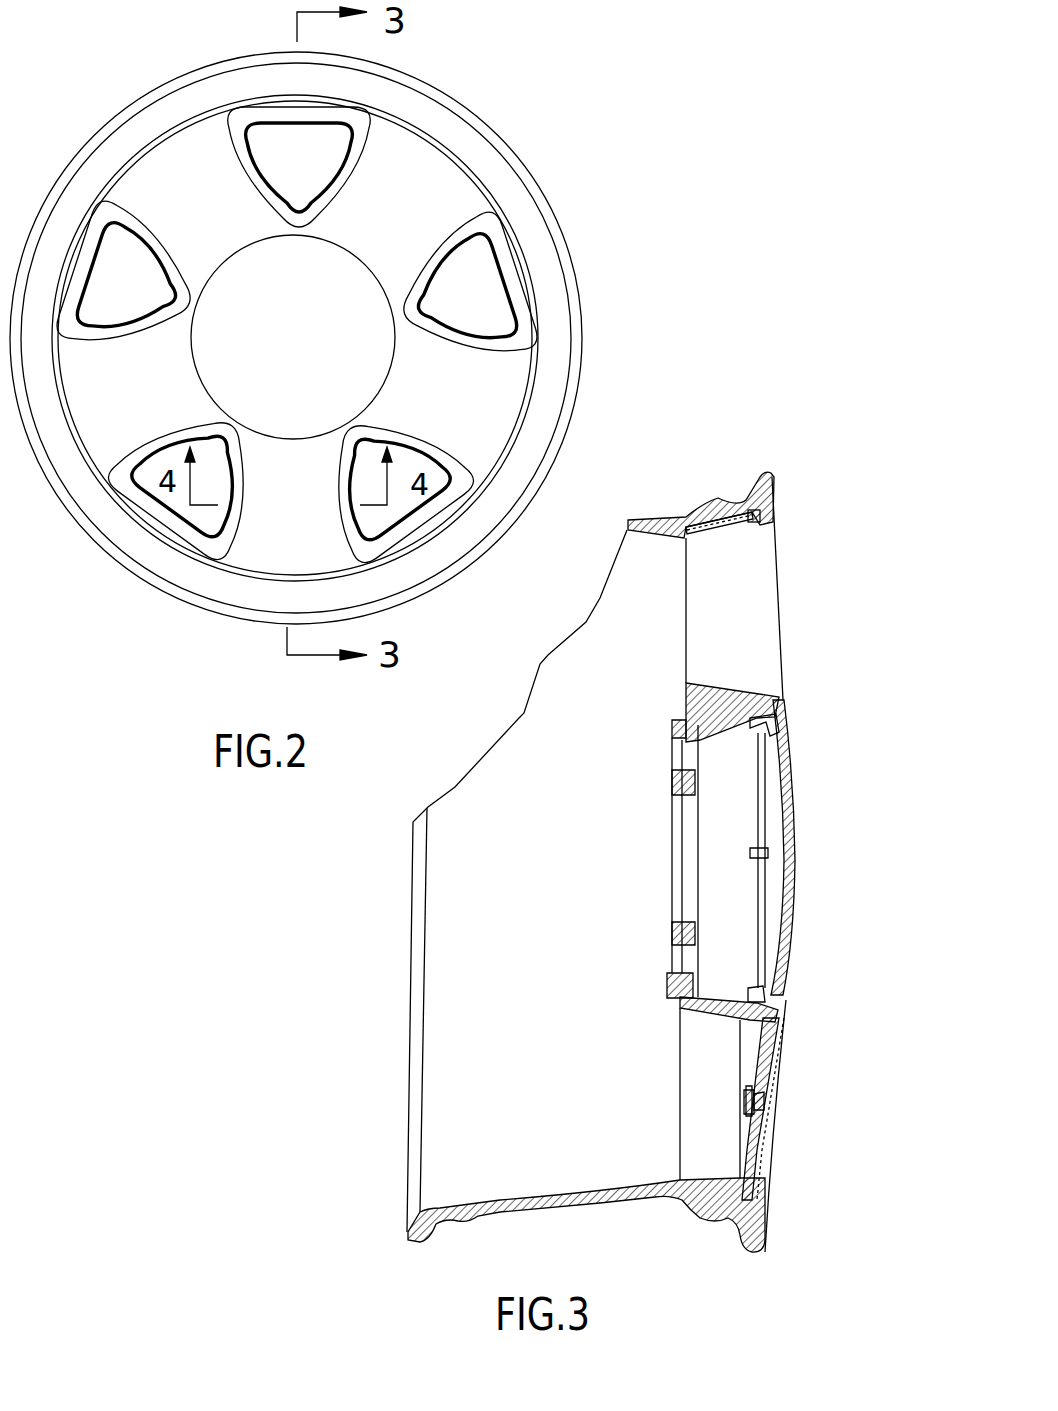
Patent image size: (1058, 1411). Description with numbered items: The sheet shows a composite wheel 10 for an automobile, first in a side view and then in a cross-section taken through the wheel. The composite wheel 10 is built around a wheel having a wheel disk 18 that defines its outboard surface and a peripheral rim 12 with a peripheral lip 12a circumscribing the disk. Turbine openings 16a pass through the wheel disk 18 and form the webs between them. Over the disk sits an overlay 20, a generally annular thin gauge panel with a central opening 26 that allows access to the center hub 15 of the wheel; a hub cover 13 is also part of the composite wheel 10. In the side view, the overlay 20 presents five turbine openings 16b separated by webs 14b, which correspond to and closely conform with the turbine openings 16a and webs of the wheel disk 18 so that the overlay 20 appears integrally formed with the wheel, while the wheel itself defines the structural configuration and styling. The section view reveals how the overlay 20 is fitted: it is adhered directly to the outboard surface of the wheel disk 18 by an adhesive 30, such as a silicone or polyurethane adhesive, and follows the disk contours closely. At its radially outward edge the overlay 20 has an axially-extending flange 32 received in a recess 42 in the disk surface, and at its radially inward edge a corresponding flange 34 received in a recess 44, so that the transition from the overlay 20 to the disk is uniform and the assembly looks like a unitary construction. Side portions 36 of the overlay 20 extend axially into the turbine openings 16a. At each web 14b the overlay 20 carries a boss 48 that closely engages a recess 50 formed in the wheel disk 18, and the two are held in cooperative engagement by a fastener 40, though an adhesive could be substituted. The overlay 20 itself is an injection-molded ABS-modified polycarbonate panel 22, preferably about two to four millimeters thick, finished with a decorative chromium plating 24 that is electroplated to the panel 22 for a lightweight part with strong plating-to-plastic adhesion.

In FIG. 2, the composite wheel 10 is at (546, 176).
In FIG. 3, the composite wheel 10 is at (712, 445).
In FIG. 2, the rim 12 is at (575, 258).
In FIG. 3, the rim 12 is at (660, 520).
In FIG. 3, the peripheral lip 12a is at (768, 474).
In FIG. 2, the hub cover 13 is at (320, 270).
In FIG. 3, the hub cover 13 is at (797, 805).
In FIG. 2, the webs 14b is at (158, 180).
In FIG. 3, the center hub 15 is at (712, 852).
In FIG. 3, the turbine openings 16a is at (770, 656).
In FIG. 2, the turbine openings 16b is at (163, 272).
In FIG. 3, the wheel disk 18 is at (760, 1112).
In FIG. 3, the overlay 20 is at (768, 545).
In FIG. 3, the panel 22 is at (715, 530).
In FIG. 3, the chromium plating 24 is at (690, 556).
In FIG. 3, the central opening 26 is at (781, 735).
In FIG. 3, the adhesive 30 is at (700, 520).
In FIG. 3, the radially outward axially-extending flange 32 is at (755, 517).
In FIG. 3, the radially inward axially-extending flange 34 is at (750, 722).
In FIG. 2, the side portions 36 is at (238, 463).
In FIG. 3, the fastener 40 is at (743, 1100).
In FIG. 3, the recess 42 is at (737, 505).
In FIG. 3, the recess 44 is at (776, 694).
In FIG. 3, the boss 48 is at (757, 1092).
In FIG. 3, the recess 50 is at (755, 1110).